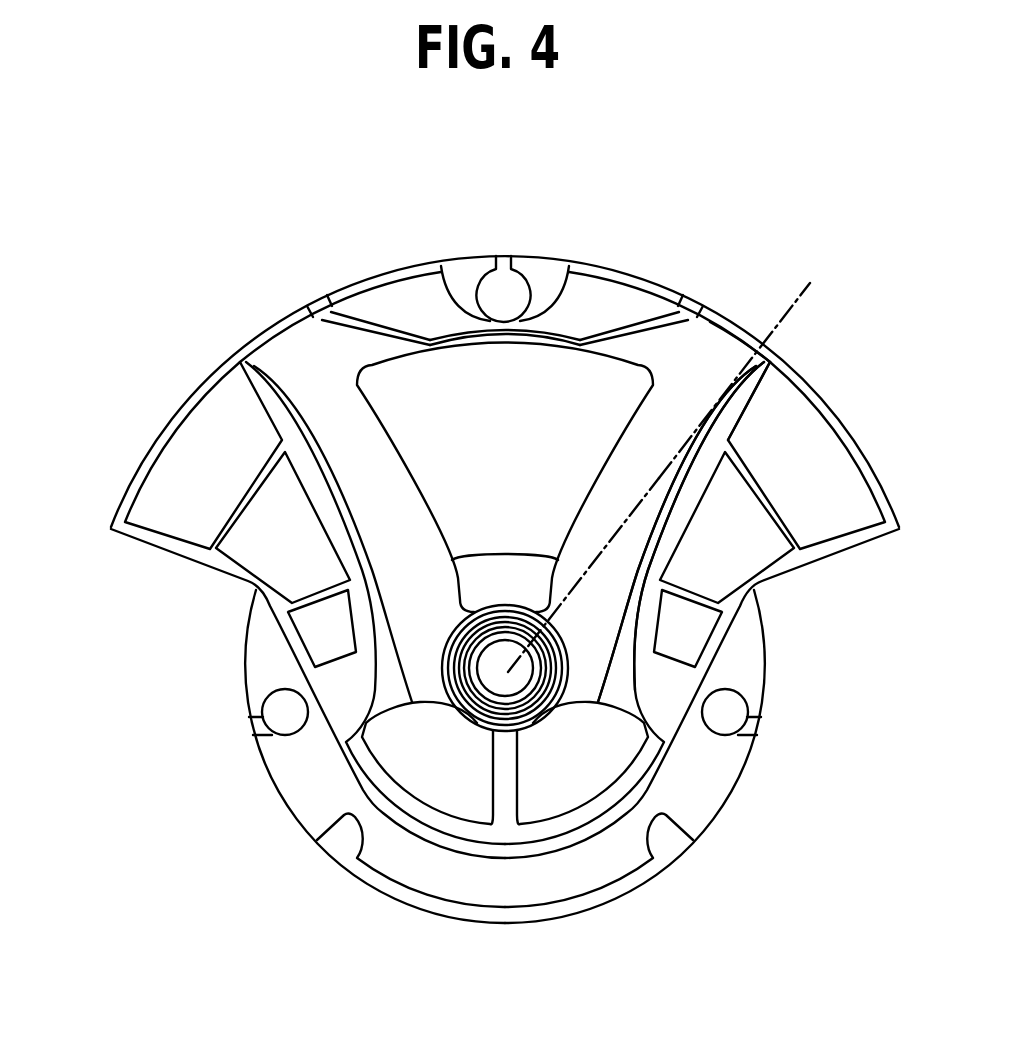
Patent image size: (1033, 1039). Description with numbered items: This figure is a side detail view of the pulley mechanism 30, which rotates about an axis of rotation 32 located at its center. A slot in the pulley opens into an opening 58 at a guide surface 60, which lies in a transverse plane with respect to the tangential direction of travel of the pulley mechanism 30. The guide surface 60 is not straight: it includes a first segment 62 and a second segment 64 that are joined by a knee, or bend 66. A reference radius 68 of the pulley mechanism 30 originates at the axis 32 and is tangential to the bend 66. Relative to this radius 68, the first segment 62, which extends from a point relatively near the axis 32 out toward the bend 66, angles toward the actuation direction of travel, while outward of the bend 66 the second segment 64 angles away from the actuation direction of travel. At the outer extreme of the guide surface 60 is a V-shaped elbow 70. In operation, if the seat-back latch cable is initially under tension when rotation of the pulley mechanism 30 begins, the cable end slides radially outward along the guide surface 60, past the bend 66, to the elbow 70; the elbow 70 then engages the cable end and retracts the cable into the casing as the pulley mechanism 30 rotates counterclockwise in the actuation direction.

The pulley mechanism 30 is at (141, 378).
The axis of rotation 32 is at (508, 672).
The opening 58 is at (455, 383).
The guide surface 60 is at (627, 552).
The first segment 62 is at (677, 513).
The second segment 64 is at (753, 396).
The bend 66 is at (723, 413).
The radius 68 is at (783, 312).
The elbow 70 is at (770, 367).